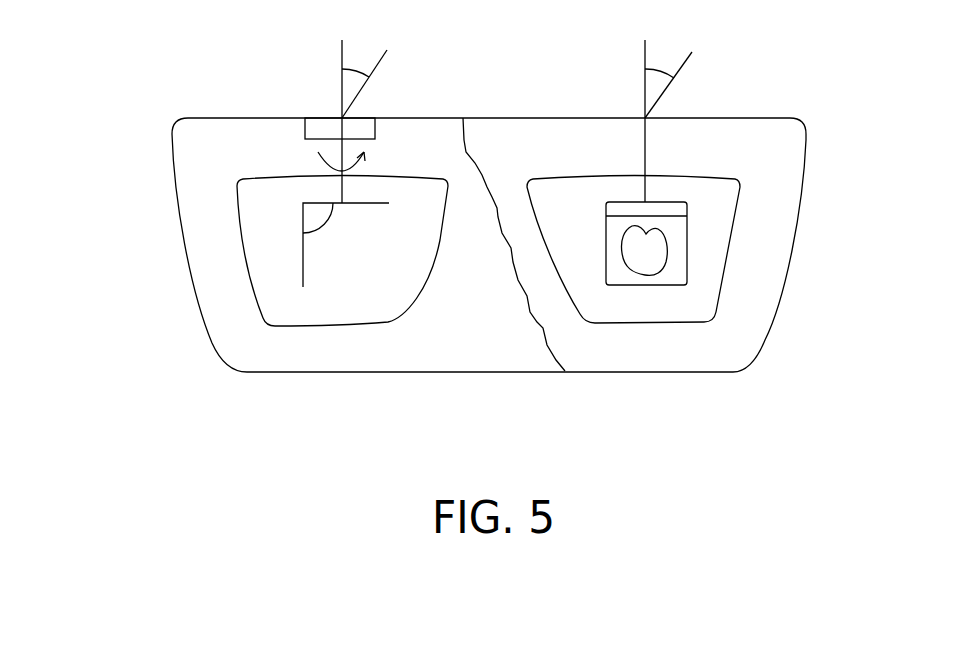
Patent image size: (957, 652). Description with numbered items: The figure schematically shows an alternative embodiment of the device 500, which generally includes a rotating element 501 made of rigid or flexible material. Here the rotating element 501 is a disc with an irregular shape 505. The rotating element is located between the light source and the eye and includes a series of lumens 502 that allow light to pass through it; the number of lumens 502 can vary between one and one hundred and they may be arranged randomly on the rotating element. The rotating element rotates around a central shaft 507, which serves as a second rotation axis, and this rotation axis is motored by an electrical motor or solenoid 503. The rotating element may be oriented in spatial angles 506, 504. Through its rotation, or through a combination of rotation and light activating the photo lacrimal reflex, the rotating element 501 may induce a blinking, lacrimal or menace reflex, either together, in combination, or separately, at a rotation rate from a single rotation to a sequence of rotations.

The device 500 is at (120, 272).
The rotating element 501 is at (287, 230).
The lumens 502 is at (653, 253).
The electrical motor or solenoid 503 is at (376, 128).
The spatial angle 504 is at (370, 91).
The irregular shape 505 is at (336, 234).
The spatial angle 506 is at (705, 70).
The central shaft 507 is at (634, 90).